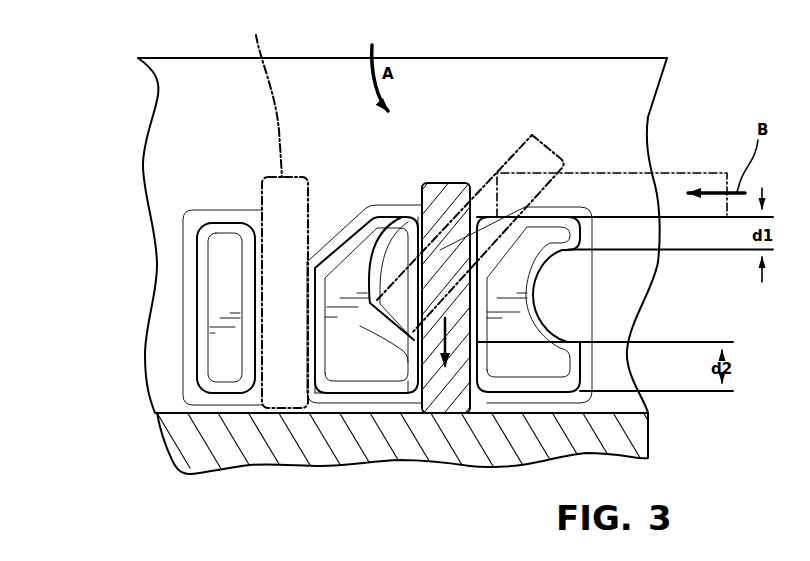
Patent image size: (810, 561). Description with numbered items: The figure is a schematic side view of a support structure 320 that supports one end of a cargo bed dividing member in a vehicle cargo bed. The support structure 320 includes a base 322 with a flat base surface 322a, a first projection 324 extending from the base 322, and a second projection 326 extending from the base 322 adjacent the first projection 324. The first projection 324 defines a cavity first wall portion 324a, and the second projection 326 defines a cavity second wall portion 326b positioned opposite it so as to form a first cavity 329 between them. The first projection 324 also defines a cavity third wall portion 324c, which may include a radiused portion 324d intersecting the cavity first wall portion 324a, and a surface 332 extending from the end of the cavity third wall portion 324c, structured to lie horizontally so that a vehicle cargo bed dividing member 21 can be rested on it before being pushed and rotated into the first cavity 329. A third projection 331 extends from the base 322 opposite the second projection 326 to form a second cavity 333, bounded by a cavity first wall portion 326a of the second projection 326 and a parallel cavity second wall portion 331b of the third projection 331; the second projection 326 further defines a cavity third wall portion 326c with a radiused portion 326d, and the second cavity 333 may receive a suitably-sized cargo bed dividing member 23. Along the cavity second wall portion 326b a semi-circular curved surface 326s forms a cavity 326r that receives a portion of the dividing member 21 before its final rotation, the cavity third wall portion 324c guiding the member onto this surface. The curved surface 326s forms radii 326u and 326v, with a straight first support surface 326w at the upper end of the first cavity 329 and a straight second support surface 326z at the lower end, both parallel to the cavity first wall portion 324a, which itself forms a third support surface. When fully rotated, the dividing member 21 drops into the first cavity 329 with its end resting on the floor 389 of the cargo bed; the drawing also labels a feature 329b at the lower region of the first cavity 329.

The cargo bed dividing member support structure 320 is at (84, 71).
The cargo bed dividing member 23 is at (278, 210).
The second projection 326 is at (372, 243).
The base surface 322a is at (434, 96).
The vehicle cargo bed dividing member 21 is at (438, 195).
The cavity third wall portion 326c is at (317, 257).
The cavity 326r is at (357, 277).
The first support surface 326w is at (413, 237).
The radius 326u is at (398, 235).
The surface 332 is at (552, 218).
The first projection 324 is at (555, 235).
The base 322 is at (160, 183).
The third projection 331 is at (225, 243).
The cavity third wall portion 324c is at (553, 262).
The radiused portion 326d is at (317, 275).
The cavity second wall portion 326b is at (362, 303).
The radiused portion 324d is at (477, 270).
The cavity second wall portion 331b is at (247, 333).
The cavity first wall portion 326a is at (316, 352).
The cavity first wall portion 324a is at (477, 348).
The floor 389 is at (213, 414).
The second cavity 333 is at (287, 372).
The curved surface 326s is at (371, 306).
The radius 326v is at (412, 338).
The second support surface 326z is at (444, 378).
The lever pivot portion 329b is at (460, 384).
The first cavity 329 is at (480, 400).